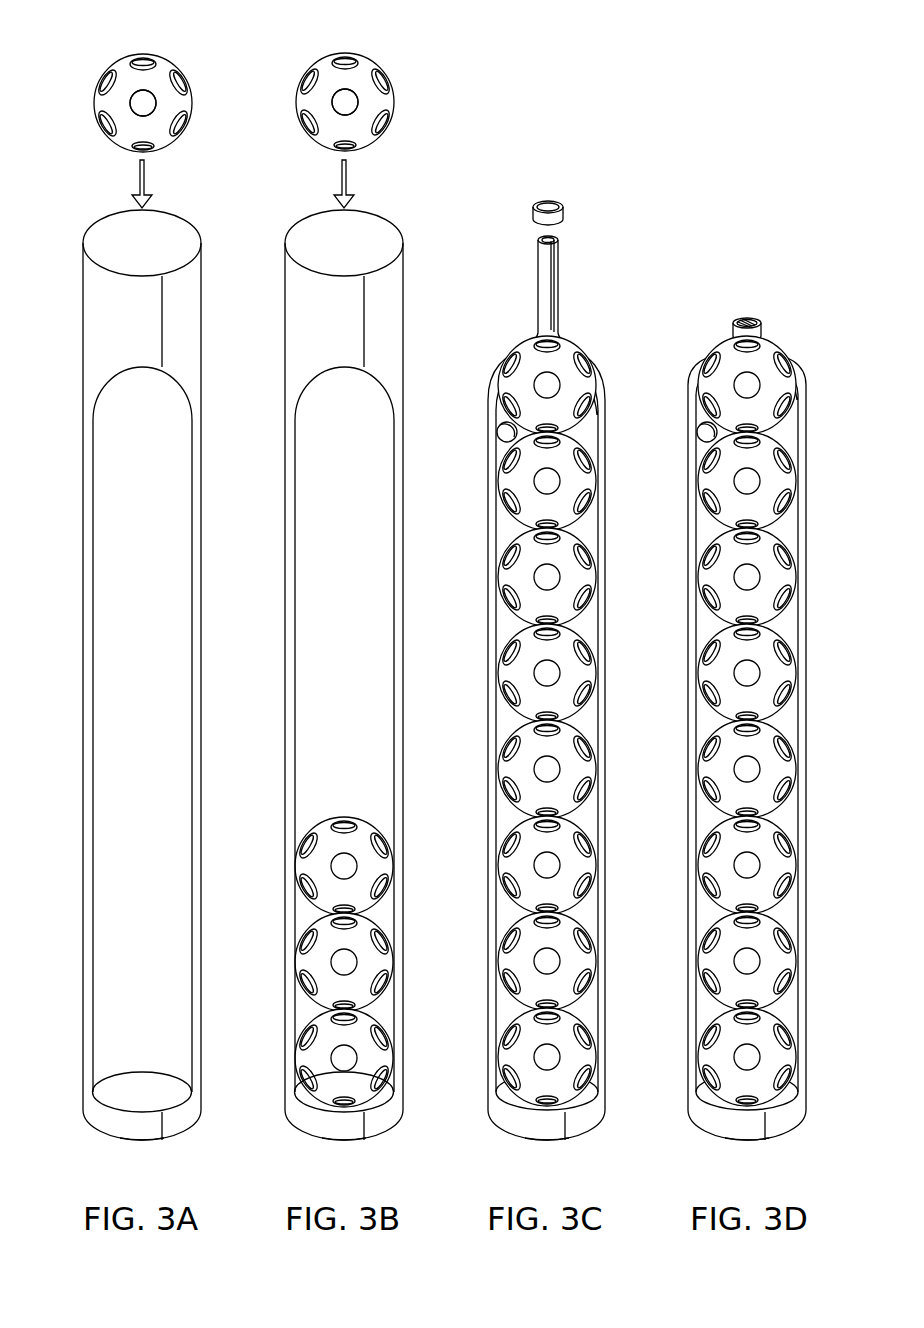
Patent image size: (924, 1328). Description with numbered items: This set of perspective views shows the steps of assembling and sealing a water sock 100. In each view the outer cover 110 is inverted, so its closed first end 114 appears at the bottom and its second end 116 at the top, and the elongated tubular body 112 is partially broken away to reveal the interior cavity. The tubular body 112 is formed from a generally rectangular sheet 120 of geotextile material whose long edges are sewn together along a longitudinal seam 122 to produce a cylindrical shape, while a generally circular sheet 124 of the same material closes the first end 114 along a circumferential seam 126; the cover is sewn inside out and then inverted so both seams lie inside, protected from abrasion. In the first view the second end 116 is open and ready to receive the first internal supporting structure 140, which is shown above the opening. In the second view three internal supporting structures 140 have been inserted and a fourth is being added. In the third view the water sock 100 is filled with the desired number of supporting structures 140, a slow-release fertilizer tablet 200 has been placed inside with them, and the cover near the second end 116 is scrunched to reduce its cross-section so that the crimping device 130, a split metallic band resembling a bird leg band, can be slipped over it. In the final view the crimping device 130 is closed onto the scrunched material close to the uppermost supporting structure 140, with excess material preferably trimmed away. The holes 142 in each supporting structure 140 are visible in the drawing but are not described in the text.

In FIG. 3A, the water sock 100 is at (155, 659).
In FIG. 3B, the water sock 100 is at (357, 660).
In FIG. 3C, the water sock 100 is at (547, 668).
In FIG. 3D, the water sock 100 is at (727, 694).
In FIG. 3A, the outer cover 110 is at (155, 659).
In FIG. 3B, the outer cover 110 is at (357, 685).
In FIG. 3C, the outer cover 110 is at (551, 705).
In FIG. 3D, the outer cover 110 is at (731, 726).
In FIG. 3A, the tubular body 112 is at (105, 375).
In FIG. 3B, the tubular body 112 is at (307, 375).
In FIG. 3C, the tubular body 112 is at (508, 370).
In FIG. 3D, the tubular body 112 is at (710, 372).
In FIG. 3A, the first end 114 is at (132, 1141).
In FIG. 3B, the first end 114 is at (334, 1141).
In FIG. 3C, the first end 114 is at (537, 1141).
In FIG. 3D, the first end 114 is at (737, 1141).
In FIG. 3A, the second end 116 is at (108, 210).
In FIG. 3B, the second end 116 is at (344, 243).
In FIG. 3C, the second end 116 is at (538, 288).
In FIG. 3D, the second end 116 is at (752, 317).
In FIG. 3A, the rectangular sheet 120 is at (145, 739).
In FIG. 3B, the rectangular sheet 120 is at (290, 440).
In FIG. 3C, the rectangular sheet 120 is at (492, 590).
In FIG. 3D, the rectangular sheet 120 is at (692, 590).
In FIG. 3A, the longitudinal seam 122 is at (165, 328).
In FIG. 3B, the longitudinal seam 122 is at (367, 328).
In FIG. 3C, the longitudinal seam 122 is at (565, 1128).
In FIG. 3D, the longitudinal seam 122 is at (765, 1128).
In FIG. 3A, the circular sheet 124 is at (160, 1097).
In FIG. 3A, the circumferential seam 126 is at (187, 1134).
In FIG. 3B, the circumferential seam 126 is at (389, 1134).
In FIG. 3C, the circumferential seam 126 is at (587, 1134).
In FIG. 3D, the circumferential seam 126 is at (697, 1127).
In FIG. 3C, the crimping device 130 is at (568, 180).
In FIG. 3D, the crimping device 130 is at (732, 328).
In FIG. 3A, the internal supporting structure 140 is at (166, 84).
In FIG. 3B, the internal supporting structure 140 is at (333, 561).
In FIG. 3C, the internal supporting structure 140 is at (520, 387).
In FIG. 3D, the internal supporting structure 140 is at (720, 387).
In FIG. 3A, the hole 142 is at (147, 106).
In FIG. 3B, the hole 142 is at (349, 106).
In FIG. 3C, the fertilizer tablet 200 is at (500, 430).
In FIG. 3D, the fertilizer tablet 200 is at (700, 430).